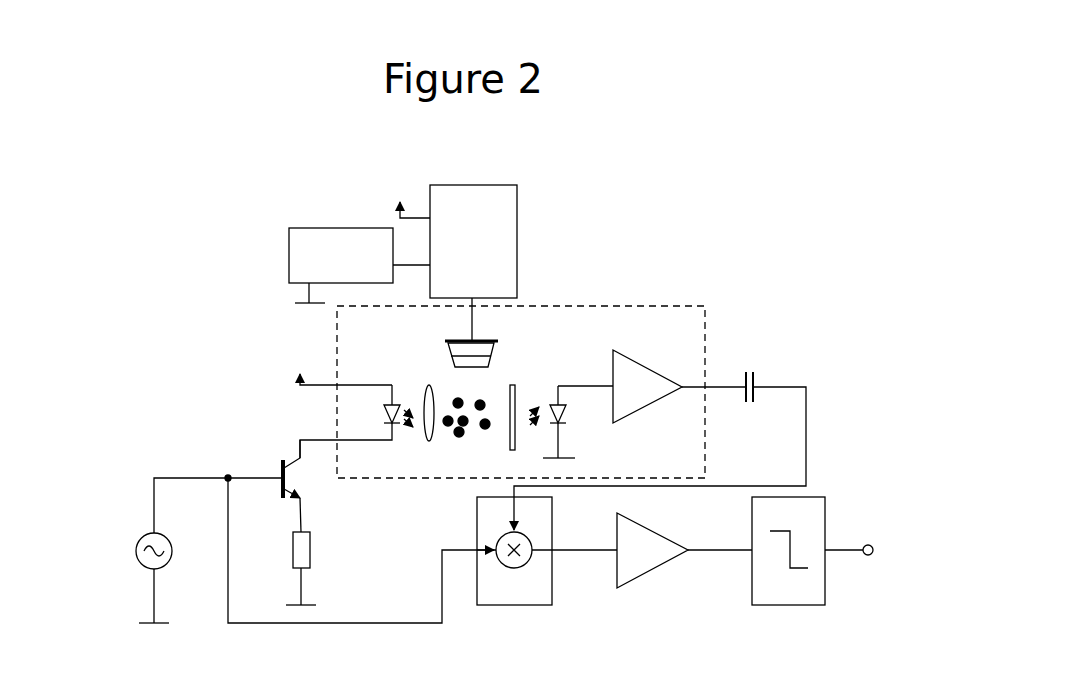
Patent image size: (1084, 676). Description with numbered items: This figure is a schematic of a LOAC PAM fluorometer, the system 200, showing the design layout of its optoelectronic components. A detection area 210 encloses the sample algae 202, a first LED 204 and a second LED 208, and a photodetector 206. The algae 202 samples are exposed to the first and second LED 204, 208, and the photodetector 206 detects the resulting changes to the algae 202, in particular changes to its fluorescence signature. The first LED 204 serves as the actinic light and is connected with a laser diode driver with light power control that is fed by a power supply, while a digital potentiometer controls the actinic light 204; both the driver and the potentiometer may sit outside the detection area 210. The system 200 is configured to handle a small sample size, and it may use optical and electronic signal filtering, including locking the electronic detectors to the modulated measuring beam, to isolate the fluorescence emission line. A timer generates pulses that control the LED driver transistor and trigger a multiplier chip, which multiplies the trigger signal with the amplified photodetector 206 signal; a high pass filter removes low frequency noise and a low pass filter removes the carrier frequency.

The system 200 is at (800, 167).
The sample algae 202 is at (461, 446).
The first LED 204 is at (498, 350).
The photodetector 206 is at (512, 450).
The second LED 208 is at (422, 437).
The detection area 210 is at (704, 328).